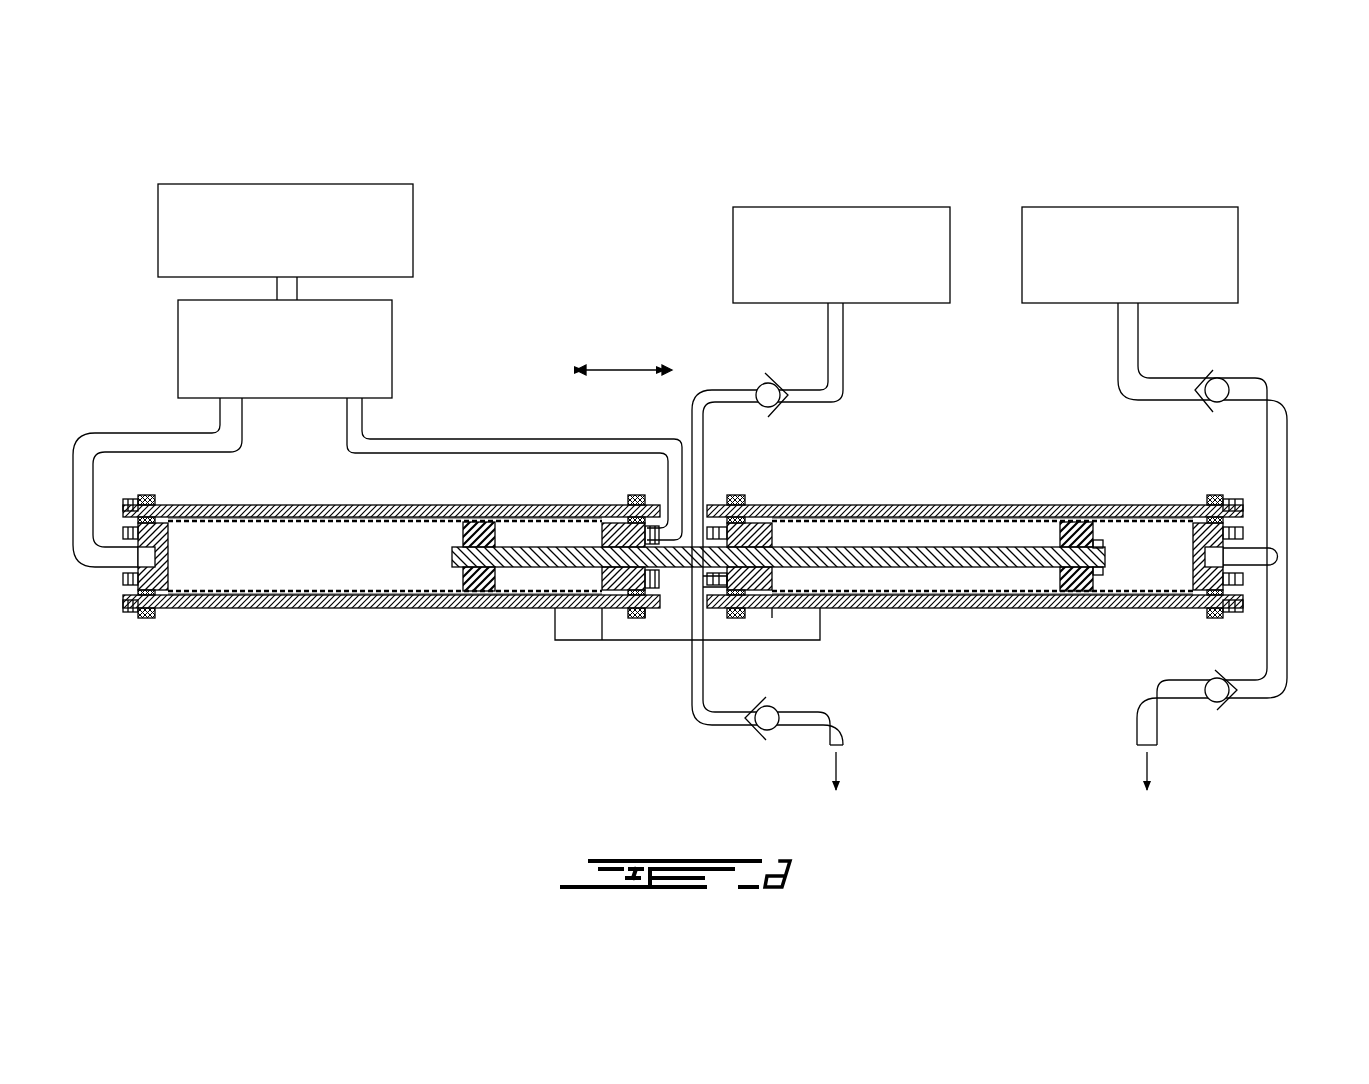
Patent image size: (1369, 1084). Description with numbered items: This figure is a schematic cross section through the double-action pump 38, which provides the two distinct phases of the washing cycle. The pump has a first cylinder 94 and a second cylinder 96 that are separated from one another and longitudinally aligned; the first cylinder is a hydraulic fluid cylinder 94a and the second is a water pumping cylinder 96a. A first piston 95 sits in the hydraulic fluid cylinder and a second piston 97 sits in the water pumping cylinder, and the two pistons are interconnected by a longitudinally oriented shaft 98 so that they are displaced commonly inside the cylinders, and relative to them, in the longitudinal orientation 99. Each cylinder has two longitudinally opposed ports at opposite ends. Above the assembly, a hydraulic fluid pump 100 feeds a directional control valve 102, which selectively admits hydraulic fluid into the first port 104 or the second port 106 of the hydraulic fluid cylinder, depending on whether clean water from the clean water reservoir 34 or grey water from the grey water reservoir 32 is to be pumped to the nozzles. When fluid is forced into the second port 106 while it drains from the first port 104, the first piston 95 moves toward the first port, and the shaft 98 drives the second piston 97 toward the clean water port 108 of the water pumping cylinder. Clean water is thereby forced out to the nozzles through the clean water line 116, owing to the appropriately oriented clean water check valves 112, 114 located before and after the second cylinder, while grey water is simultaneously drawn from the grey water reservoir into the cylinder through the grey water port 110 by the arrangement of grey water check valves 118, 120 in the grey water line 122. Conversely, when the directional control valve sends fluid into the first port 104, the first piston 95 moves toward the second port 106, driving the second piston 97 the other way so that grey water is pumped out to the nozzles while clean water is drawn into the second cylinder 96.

The hydraulic fluid pump 100 is at (413, 215).
The directional control valve 102 is at (392, 330).
The clean water reservoir 34 is at (880, 207).
The grey water reservoir 32 is at (1183, 207).
The clean water line 116 is at (850, 358).
The clean water check valve 112 is at (770, 408).
The clean water check valve 114 is at (775, 712).
The grey water line 122 is at (1292, 450).
The grey water check valve 118 is at (1218, 382).
The grey water check valve 120 is at (1218, 702).
The longitudinal orientation 99 is at (622, 368).
The first cylinder 94 is at (432, 505).
The hydraulic fluid cylinder 94a is at (520, 517).
The second cylinder 96 is at (995, 503).
The water pumping cylinder 96a is at (905, 505).
The first piston 95 is at (478, 591).
The second piston 97 is at (1065, 591).
The first port 104 is at (140, 555).
The shaft 98 is at (612, 575).
The second port 106 is at (655, 495).
The clean water port 108 is at (735, 610).
The grey water port 110 is at (1198, 555).
The double-action pump 38 is at (262, 708).